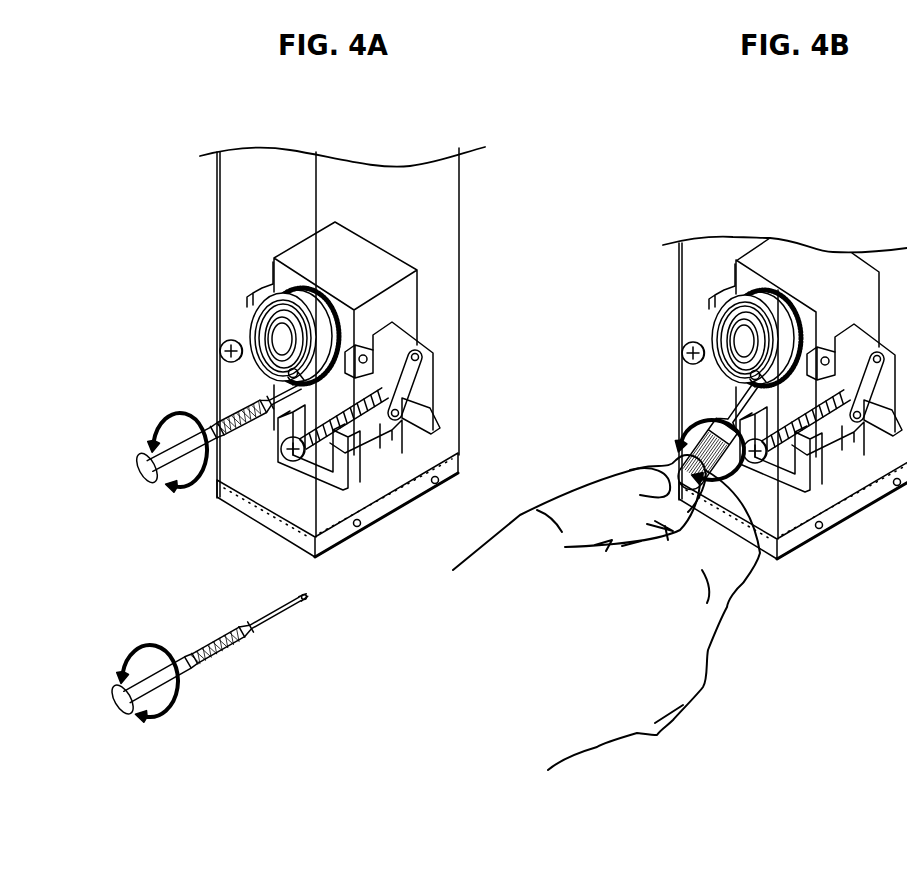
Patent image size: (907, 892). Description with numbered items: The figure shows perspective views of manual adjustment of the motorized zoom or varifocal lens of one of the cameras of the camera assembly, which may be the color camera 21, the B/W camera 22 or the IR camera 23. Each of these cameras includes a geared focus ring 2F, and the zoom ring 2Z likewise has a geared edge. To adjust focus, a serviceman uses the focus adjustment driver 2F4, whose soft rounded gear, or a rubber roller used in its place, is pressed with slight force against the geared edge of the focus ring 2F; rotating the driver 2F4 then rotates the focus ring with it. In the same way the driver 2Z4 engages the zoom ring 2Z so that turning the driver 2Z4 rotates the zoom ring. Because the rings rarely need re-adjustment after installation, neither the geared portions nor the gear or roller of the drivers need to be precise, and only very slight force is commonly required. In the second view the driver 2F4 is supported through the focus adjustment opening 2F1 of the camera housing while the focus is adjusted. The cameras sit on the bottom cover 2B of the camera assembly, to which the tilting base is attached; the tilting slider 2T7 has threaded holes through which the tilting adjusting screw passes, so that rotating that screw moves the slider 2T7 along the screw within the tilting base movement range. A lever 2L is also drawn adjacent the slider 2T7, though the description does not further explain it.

In FIG. 4A, the color camera 21 is at (432, 333).
In FIG. 4A, the B/W camera 22 is at (432, 333).
In FIG. 4A, the IR camera 23 is at (368, 254).
In FIG. 4A, the geared focus ring 2F is at (283, 288).
In FIG. 4B, the geared focus ring 2F is at (711, 294).
In FIG. 4A, the zoom ring 2Z is at (253, 312).
In FIG. 4B, the zoom ring 2Z is at (666, 287).
In FIG. 4A, the lever 2L is at (407, 385).
In FIG. 4A, the tilting slider 2T7 is at (403, 450).
In FIG. 4A, the bottom cover 2B is at (384, 511).
In FIG. 4A, the focus adjustment opening 2F1 is at (299, 386).
In FIG. 4B, the focus adjustment opening 2F1 is at (824, 469).
In FIG. 4A, the driver 2Z4 is at (140, 478).
In FIG. 4A, the focus adjustment driver 2F4 is at (186, 660).
In FIG. 4B, the focus adjustment driver 2F4 is at (735, 418).